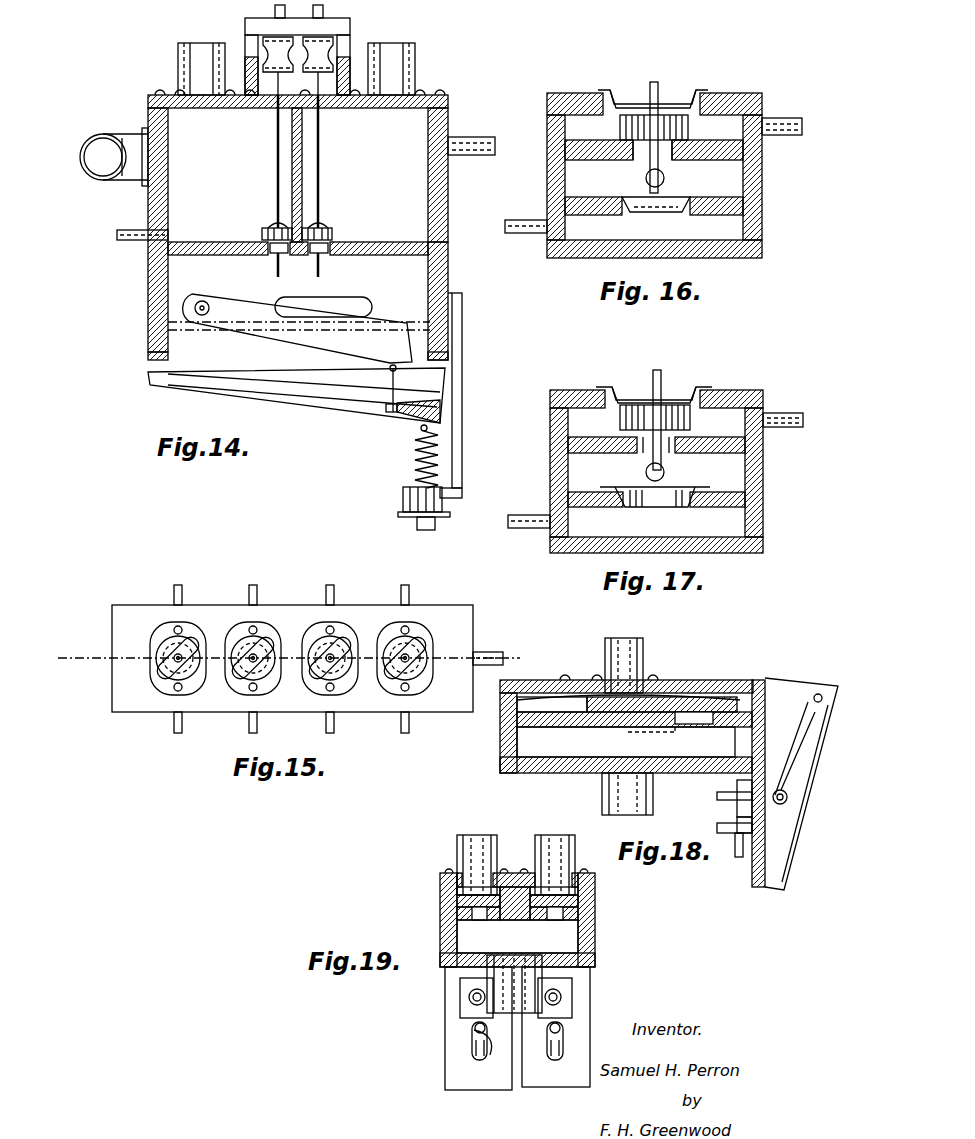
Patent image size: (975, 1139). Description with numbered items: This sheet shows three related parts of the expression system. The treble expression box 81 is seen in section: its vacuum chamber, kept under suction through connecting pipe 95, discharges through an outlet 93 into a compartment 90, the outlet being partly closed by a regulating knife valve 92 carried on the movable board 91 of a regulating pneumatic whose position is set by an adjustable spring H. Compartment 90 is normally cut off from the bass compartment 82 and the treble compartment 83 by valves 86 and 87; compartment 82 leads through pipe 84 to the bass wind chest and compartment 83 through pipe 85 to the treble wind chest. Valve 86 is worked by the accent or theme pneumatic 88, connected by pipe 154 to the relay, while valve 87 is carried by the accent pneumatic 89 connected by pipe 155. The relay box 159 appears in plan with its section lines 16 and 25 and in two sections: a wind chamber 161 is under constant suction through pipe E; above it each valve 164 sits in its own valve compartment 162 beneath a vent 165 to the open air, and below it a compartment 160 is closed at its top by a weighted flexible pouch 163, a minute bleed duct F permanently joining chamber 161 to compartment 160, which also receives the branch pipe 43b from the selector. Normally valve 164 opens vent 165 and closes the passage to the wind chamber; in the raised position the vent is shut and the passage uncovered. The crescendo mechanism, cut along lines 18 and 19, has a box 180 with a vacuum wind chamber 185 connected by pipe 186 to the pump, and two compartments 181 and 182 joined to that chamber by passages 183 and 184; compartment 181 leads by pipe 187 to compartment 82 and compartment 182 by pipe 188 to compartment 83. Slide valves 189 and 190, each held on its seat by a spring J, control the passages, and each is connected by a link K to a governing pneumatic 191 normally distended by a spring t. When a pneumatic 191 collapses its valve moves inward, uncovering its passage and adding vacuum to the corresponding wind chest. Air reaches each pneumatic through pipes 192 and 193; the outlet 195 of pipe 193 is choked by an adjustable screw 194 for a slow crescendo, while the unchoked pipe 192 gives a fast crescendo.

In FIG. 14, the treble expression box 81 is at (150, 247).
In FIG. 14, the bass compartment 82 is at (185, 118).
In FIG. 14, the treble compartment 83 is at (415, 200).
In FIG. 14, the pipe 84 is at (178, 62).
In FIG. 14, the pipe 85 is at (415, 66).
In FIG. 14, the valve 86 is at (270, 226).
In FIG. 14, the valve 87 is at (328, 226).
In FIG. 14, the accent or theme pneumatic 88 is at (277, 112).
In FIG. 14, the accent or theme pneumatic 89 is at (320, 112).
In FIG. 14, the compartment 90 is at (410, 268).
In FIG. 14, the movable board 91 is at (357, 390).
In FIG. 14, the regulating knife valve 92 is at (243, 307).
In FIG. 14, the outlet 93 is at (354, 306).
In FIG. 14, the connecting pipe 95 is at (113, 133).
In FIG. 14, the adjustable spring H is at (415, 459).
In FIG. 14, the pipe 154 is at (277, 14).
In FIG. 16, the pipe 154 is at (794, 131).
In FIG. 17, the pipe 154 is at (792, 427).
In FIG. 15, the pipe 154 is at (291, 659).
In FIG. 14, the pipe 155 is at (326, 14).
In FIG. 16, the relay box 159 is at (547, 197).
In FIG. 17, the relay box 159 is at (550, 471).
In FIG. 15, the relay box 159 is at (145, 703).
In FIG. 16, the compartment 160 is at (735, 232).
In FIG. 17, the compartment 160 is at (735, 521).
In FIG. 16, the wind chamber 161 is at (730, 183).
In FIG. 17, the wind chamber 161 is at (730, 477).
In FIG. 16, the valve compartment 162 is at (745, 128).
In FIG. 17, the valve compartment 162 is at (732, 416).
In FIG. 16, the weighted flexible diaphragm or pouch 163 is at (666, 209).
In FIG. 17, the weighted flexible diaphragm or pouch 163 is at (668, 498).
In FIG. 16, the valve 164 is at (686, 134).
In FIG. 17, the valve 164 is at (622, 418).
In FIG. 16, the vent 165 is at (672, 101).
In FIG. 17, the vent 165 is at (672, 400).
In FIG. 15, the vent 165 is at (160, 656).
In FIG. 16, the pipe E is at (646, 178).
In FIG. 15, the pipe E is at (490, 652).
In FIG. 16, the bleed duct F is at (762, 205).
In FIG. 17, the bleed duct F is at (763, 497).
In FIG. 16, the branch pipe 43b is at (536, 234).
In FIG. 17, the branch pipe 43b is at (530, 529).
In FIG. 15, the section line 25 is at (515, 658).
In FIG. 15, the section line 16 is at (416, 755).
In FIG. 19, the section line 18 is at (478, 1098).
In FIG. 18, the section line 19 is at (633, 828).
In FIG. 18, the box 180 is at (497, 750).
In FIG. 19, the box 180 is at (595, 947).
In FIG. 18, the compartment 181 is at (742, 693).
In FIG. 19, the compartment 181 is at (457, 890).
In FIG. 19, the compartment 182 is at (595, 884).
In FIG. 18, the passage 183 is at (700, 724).
In FIG. 19, the passage 183 is at (457, 912).
In FIG. 19, the passage 184 is at (578, 905).
In FIG. 18, the vacuum wind chamber 185 is at (626, 742).
In FIG. 19, the vacuum wind chamber 185 is at (517, 936).
In FIG. 18, the pipe 186 is at (602, 795).
In FIG. 19, the pipe 186 is at (505, 1000).
In FIG. 14, the pipe 187 is at (117, 235).
In FIG. 18, the pipe 187 is at (643, 656).
In FIG. 19, the pipe 187 is at (457, 848).
In FIG. 14, the pipe 188 is at (482, 131).
In FIG. 19, the pipe 188 is at (563, 828).
In FIG. 18, the slide valve 189 is at (695, 700).
In FIG. 19, the slide valve 189 is at (457, 899).
In FIG. 19, the slide valve 190 is at (596, 899).
In FIG. 18, the governing pneumatic 191 is at (788, 800).
In FIG. 19, the governing pneumatic 191 is at (455, 1034).
In FIG. 18, the pipe 192 is at (717, 796).
In FIG. 19, the pipe 192 is at (470, 996).
In FIG. 18, the pipe 193 is at (737, 855).
In FIG. 19, the pipe 193 is at (475, 1050).
In FIG. 18, the adjustable screw 194 is at (717, 826).
In FIG. 19, the adjustable screw 194 is at (472, 1040).
In FIG. 18, the outlet 195 is at (738, 825).
In FIG. 19, the outlet 195 is at (511, 1052).
In FIG. 18, the spring J is at (575, 693).
In FIG. 18, the link K is at (780, 688).
In FIG. 18, the spring t is at (800, 785).